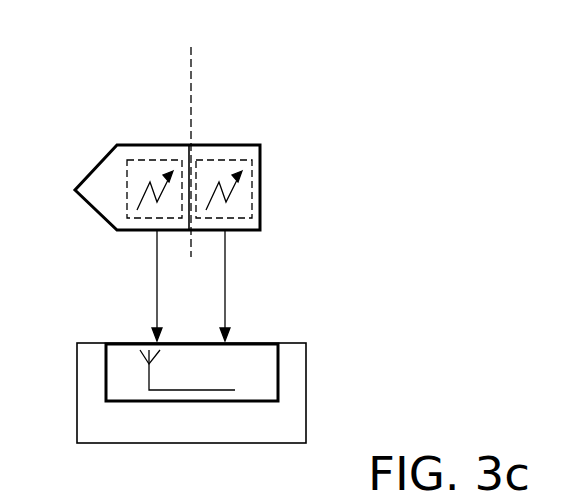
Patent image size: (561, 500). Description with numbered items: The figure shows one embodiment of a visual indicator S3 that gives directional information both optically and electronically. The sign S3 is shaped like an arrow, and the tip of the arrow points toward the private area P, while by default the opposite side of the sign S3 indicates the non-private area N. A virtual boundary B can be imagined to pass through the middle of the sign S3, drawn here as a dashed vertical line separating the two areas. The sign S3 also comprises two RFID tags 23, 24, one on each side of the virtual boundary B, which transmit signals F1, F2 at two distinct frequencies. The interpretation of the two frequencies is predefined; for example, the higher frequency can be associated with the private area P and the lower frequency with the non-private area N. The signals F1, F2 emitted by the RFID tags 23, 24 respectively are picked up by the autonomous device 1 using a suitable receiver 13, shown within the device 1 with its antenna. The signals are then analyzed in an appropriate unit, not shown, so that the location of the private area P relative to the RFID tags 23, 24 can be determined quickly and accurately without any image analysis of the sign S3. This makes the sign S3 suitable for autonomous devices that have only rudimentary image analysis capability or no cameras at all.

The autonomous device 1 is at (87, 412).
The receiver 13 is at (262, 363).
The RFID tag 23 is at (245, 202).
The RFID tag 24 is at (125, 165).
The visual indicator S3 is at (262, 173).
The signal F1 is at (227, 280).
The signal F2 is at (155, 287).
The virtual boundary B is at (190, 52).
The private area P is at (150, 92).
The non-private area N is at (258, 92).